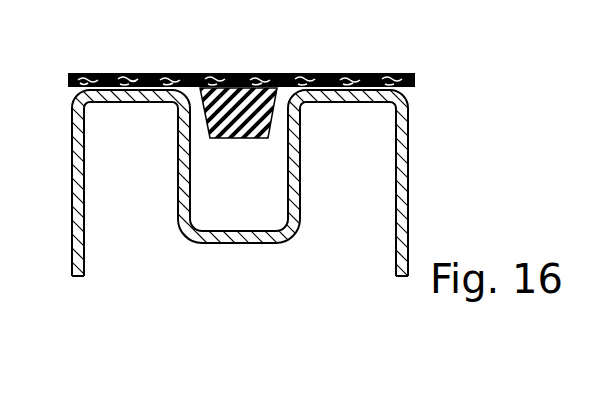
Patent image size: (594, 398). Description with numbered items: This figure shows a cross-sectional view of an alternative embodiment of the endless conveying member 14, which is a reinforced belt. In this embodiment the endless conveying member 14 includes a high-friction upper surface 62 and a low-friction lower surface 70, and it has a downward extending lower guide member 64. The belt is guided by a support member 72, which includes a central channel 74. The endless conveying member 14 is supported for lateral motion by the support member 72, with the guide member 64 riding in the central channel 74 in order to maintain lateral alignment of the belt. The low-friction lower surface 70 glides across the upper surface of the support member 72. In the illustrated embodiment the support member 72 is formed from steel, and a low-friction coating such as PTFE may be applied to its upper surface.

The endless conveying member 14 is at (172, 73).
The upper surface 62 is at (368, 75).
The guide member 64 is at (273, 113).
The low-friction lower surface 70 is at (388, 93).
The support member 72 is at (409, 203).
The central channel 74 is at (284, 183).